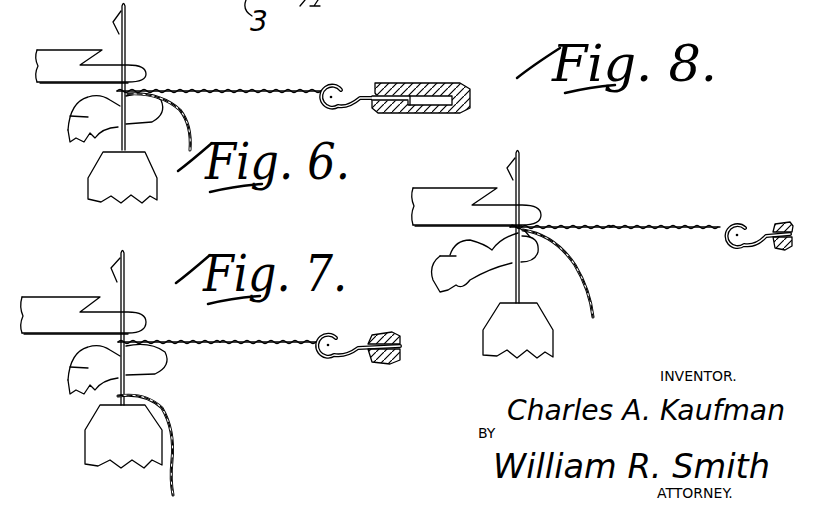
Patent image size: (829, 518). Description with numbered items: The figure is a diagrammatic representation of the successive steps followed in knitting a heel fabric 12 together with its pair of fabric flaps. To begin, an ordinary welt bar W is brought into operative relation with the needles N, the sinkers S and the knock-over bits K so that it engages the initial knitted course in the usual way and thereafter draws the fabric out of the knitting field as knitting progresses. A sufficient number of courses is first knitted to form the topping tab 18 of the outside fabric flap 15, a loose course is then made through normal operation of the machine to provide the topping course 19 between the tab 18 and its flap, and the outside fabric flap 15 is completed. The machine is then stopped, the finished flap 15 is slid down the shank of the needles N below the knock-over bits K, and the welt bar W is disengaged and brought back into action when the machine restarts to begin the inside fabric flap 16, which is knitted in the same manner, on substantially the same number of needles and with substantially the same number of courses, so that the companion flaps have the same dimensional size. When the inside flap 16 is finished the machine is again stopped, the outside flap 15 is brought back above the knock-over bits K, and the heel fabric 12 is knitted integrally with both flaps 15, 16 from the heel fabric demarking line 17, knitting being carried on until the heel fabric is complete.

In FIG. 6, the sinkers S is at (66, 58).
In FIG. 7, the sinkers S is at (58, 306).
In FIG. 8, the sinkers S is at (466, 196).
In FIG. 6, the needles N is at (126, 42).
In FIG. 7, the needles N is at (125, 278).
In FIG. 8, the needles N is at (521, 176).
In FIG. 6, the knock-over bits K is at (70, 116).
In FIG. 7, the knock-over bits K is at (70, 367).
In FIG. 8, the knock-over bits K is at (440, 256).
In FIG. 6, the welt bar W is at (455, 88).
In FIG. 7, the welt bar W is at (394, 332).
In FIG. 8, the welt bar W is at (784, 222).
In FIG. 8, the heel fabric 12 is at (532, 236).
In FIG. 6, the fabric flap 15 is at (210, 90).
In FIG. 7, the fabric flap 15 is at (212, 432).
In FIG. 8, the fabric flap 15 is at (580, 260).
In FIG. 7, the fabric flap 16 is at (226, 346).
In FIG. 8, the fabric flap 16 is at (600, 224).
In FIG. 8, the heel fabric demarking line 17 is at (535, 226).
In FIG. 6, the topping tab 18 is at (322, 86).
In FIG. 7, the topping tab 18 is at (318, 338).
In FIG. 8, the topping tab 18 is at (720, 222).
In FIG. 6, the topping course 19 is at (284, 72).
In FIG. 7, the topping course 19 is at (266, 346).
In FIG. 8, the topping course 19 is at (684, 224).